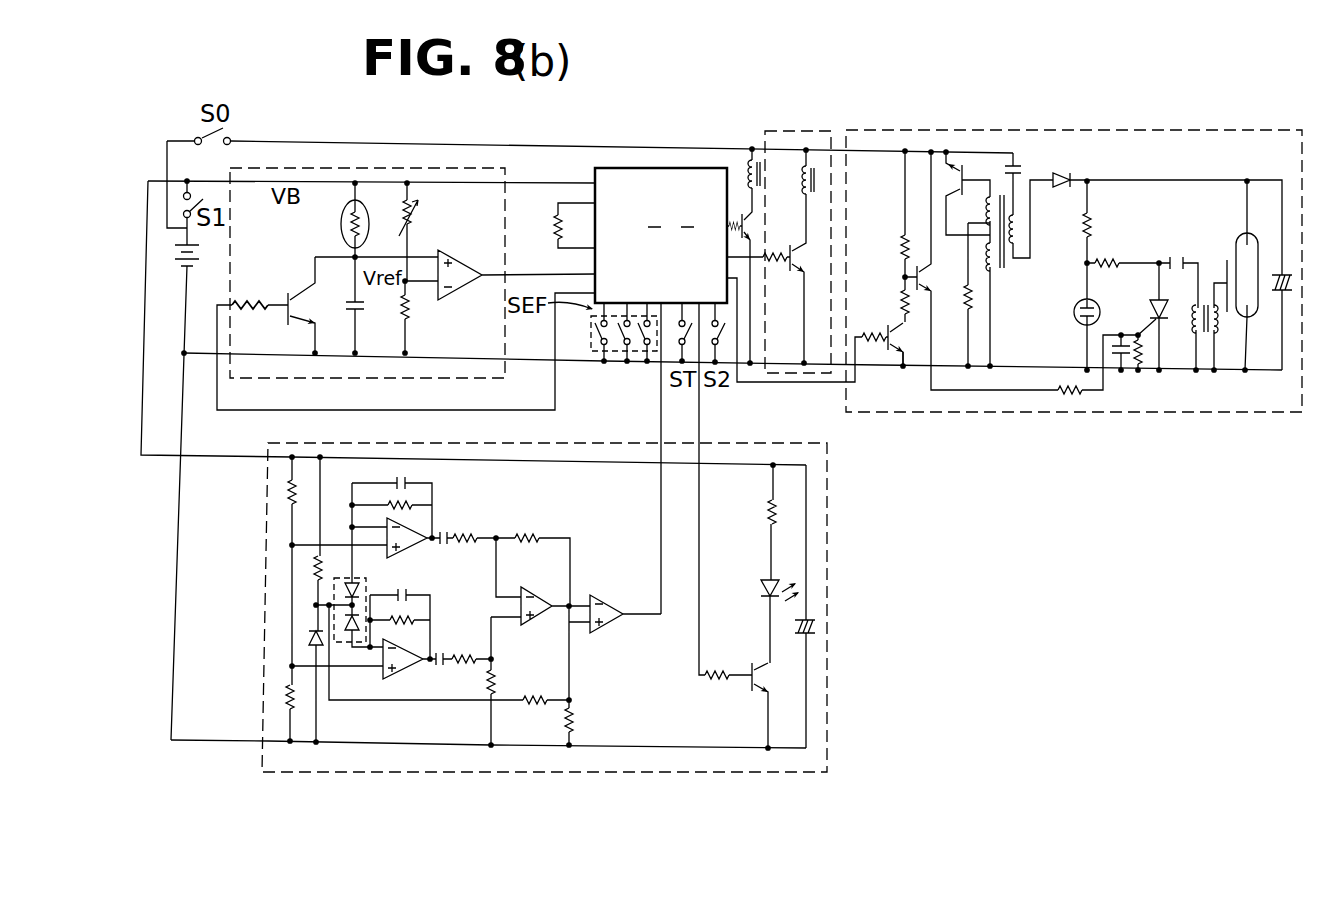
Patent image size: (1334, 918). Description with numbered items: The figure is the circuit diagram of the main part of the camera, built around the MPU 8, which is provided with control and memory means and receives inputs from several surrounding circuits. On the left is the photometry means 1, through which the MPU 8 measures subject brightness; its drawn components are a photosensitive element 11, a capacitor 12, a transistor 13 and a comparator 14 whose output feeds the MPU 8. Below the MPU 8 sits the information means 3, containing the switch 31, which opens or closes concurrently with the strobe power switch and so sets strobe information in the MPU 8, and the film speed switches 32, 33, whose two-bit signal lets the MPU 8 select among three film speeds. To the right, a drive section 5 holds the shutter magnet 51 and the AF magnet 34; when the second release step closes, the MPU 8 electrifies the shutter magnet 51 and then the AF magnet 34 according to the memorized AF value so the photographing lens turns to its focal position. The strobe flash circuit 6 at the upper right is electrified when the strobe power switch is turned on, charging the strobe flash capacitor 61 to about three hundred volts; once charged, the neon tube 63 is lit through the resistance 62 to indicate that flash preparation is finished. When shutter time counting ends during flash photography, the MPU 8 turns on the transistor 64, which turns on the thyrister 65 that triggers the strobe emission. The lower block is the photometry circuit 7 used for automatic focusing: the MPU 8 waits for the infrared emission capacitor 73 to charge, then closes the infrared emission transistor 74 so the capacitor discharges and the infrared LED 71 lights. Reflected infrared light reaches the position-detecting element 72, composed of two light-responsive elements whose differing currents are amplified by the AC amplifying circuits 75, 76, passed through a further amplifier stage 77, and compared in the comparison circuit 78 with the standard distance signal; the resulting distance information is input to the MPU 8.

The photometry means 1 is at (506, 170).
The information means 3 is at (596, 422).
The drive circuit 5 is at (812, 89).
The strobe flash circuit 6 is at (1138, 130).
The photometry circuit 7 is at (826, 518).
The MPU 8 is at (621, 209).
The photosensitive element 11 is at (341, 222).
The capacitor 12 is at (360, 311).
The transistor 13 is at (286, 292).
The comparator 14 is at (462, 297).
The switch 31 is at (599, 340).
The film speed switch 32 is at (620, 344).
The film speed switch 33 is at (640, 345).
The AF magnet 34 is at (750, 160).
The shutter magnet 51 is at (800, 182).
The strobe flash capacitor 61 is at (1292, 290).
The resistance 62 is at (1094, 228).
The neon tube 63 is at (1073, 312).
The transistor 64 is at (886, 324).
The thyrister 65 is at (1152, 306).
The infrared LED 71 is at (760, 588).
The position-detecting element 72 is at (366, 580).
The infrared emission capacitor 73 is at (803, 636).
The infrared emission transistor 74 is at (757, 693).
The AC amplifying circuit 75 is at (413, 546).
The AC amplifying circuit 76 is at (413, 672).
The operational amplifier 77 is at (534, 624).
The comparison circuit 78 is at (604, 634).